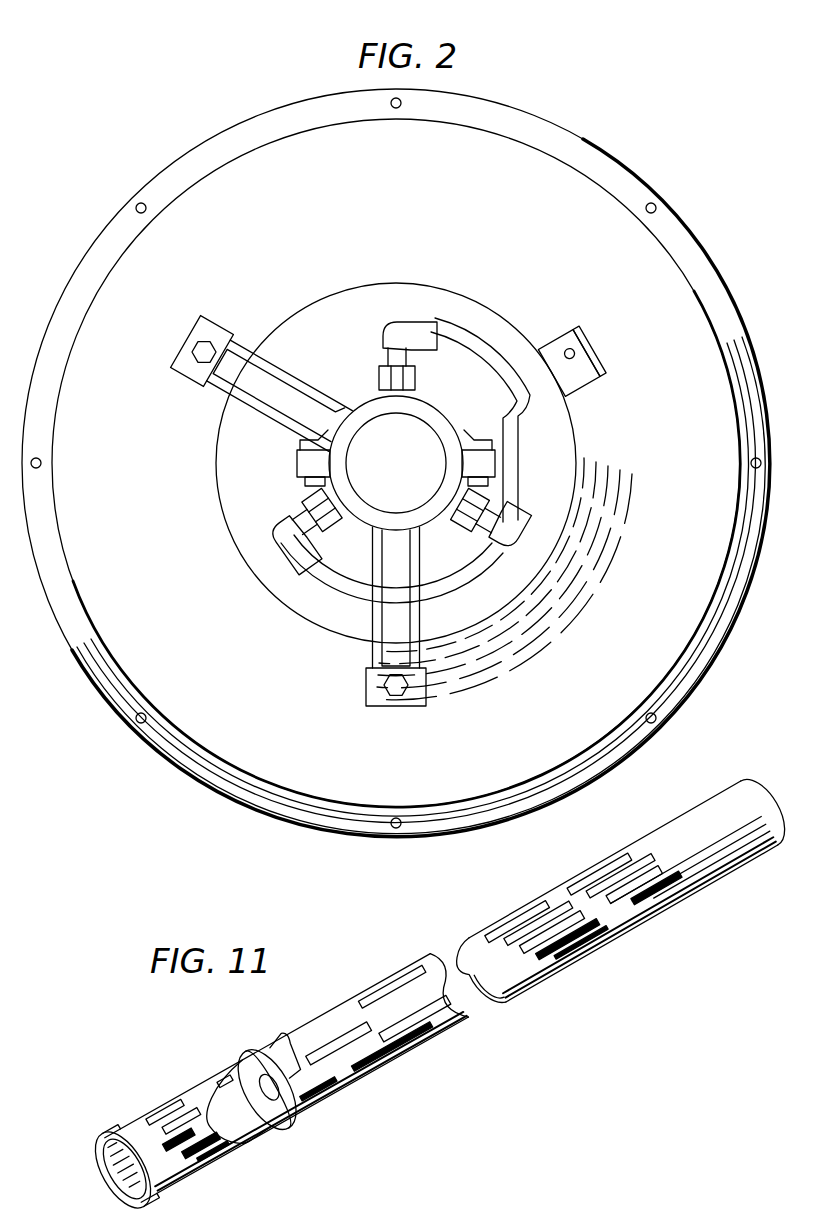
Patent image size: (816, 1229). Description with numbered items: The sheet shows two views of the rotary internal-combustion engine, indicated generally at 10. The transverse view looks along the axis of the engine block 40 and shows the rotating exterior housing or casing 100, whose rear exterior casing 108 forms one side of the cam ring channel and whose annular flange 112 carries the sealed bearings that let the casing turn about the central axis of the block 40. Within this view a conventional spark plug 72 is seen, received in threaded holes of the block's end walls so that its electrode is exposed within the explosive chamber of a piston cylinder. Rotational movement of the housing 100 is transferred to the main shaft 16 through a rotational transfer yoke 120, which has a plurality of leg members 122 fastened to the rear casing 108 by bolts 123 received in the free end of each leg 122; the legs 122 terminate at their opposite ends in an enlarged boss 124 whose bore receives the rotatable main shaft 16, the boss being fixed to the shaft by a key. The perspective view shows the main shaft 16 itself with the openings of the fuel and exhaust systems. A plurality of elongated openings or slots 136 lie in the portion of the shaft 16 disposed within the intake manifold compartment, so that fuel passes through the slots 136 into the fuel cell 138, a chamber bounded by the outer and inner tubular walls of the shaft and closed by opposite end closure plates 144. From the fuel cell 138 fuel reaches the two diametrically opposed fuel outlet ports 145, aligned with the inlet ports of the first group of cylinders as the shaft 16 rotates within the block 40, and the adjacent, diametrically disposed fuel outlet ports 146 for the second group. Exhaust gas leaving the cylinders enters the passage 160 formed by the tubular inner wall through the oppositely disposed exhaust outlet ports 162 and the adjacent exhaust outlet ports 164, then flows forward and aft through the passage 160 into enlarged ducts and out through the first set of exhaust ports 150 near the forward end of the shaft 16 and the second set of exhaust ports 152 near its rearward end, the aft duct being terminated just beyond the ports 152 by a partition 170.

In FIG. 2, the cleaning apparatus 10 is at (632, 120).
In FIG. 2, the exterior housing or casing 100 is at (168, 163).
In FIG. 2, the rear exterior casing 108 is at (305, 770).
In FIG. 2, the annular flange 112 is at (230, 521).
In FIG. 2, the rotational transfer yoke 120 is at (258, 335).
In FIG. 2, the leg members 122 is at (556, 350).
In FIG. 2, the bolts 123 is at (205, 352).
In FIG. 2, the enlarged boss 124 is at (372, 414).
In FIG. 2, the engine block 40 is at (348, 335).
In FIG. 2, the spark plug 72 is at (398, 318).
In FIG. 11, the main shaft 16 is at (690, 825).
In FIG. 11, the partition 170 is at (112, 1145).
In FIG. 11, the second set of exhaust ports 152 is at (170, 1130).
In FIG. 11, the exhaust outlet ports 164 is at (338, 1045).
In FIG. 11, the exhaust outlet ports 162 is at (400, 988).
In FIG. 11, the fuel outlet ports 145 is at (350, 1083).
In FIG. 11, the fuel outlet ports 146 is at (421, 1021).
In FIG. 11, the passage 160 is at (280, 1117).
In FIG. 11, the end closure plates 144 is at (246, 1074).
In FIG. 11, the fuel cell 138 is at (293, 1053).
In FIG. 11, the elongated openings or slots 136 is at (520, 906).
In FIG. 11, the first set of exhaust ports 150 is at (613, 860).